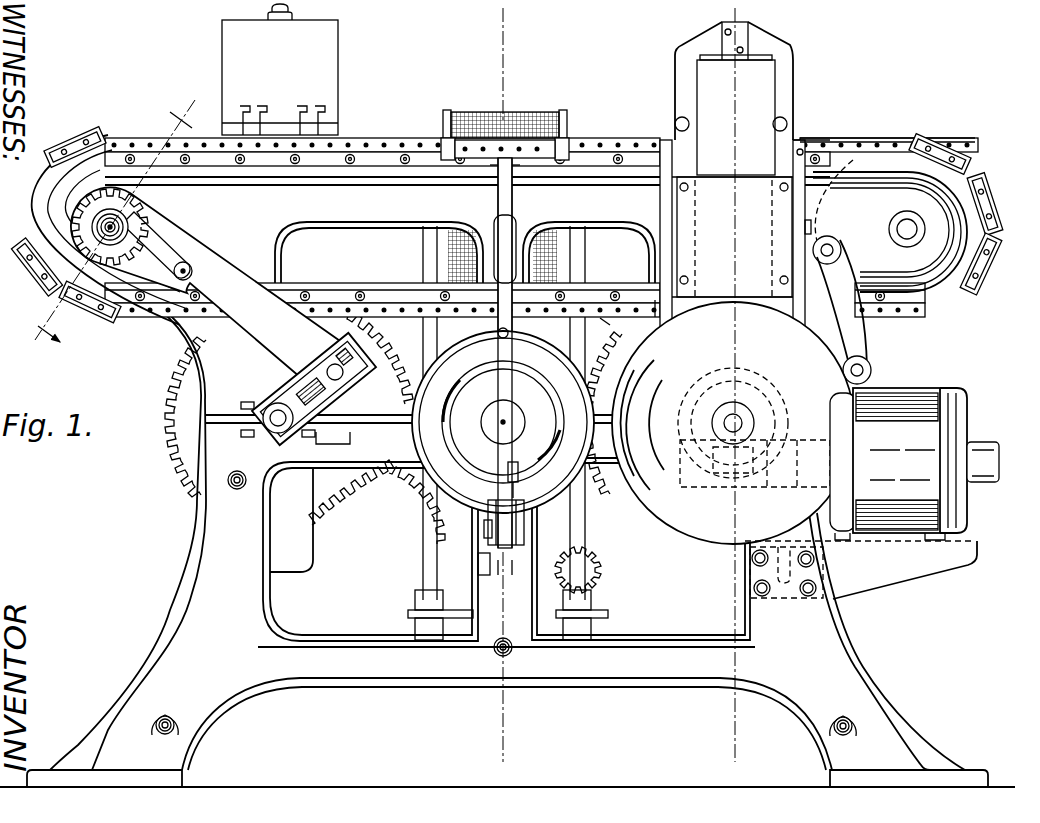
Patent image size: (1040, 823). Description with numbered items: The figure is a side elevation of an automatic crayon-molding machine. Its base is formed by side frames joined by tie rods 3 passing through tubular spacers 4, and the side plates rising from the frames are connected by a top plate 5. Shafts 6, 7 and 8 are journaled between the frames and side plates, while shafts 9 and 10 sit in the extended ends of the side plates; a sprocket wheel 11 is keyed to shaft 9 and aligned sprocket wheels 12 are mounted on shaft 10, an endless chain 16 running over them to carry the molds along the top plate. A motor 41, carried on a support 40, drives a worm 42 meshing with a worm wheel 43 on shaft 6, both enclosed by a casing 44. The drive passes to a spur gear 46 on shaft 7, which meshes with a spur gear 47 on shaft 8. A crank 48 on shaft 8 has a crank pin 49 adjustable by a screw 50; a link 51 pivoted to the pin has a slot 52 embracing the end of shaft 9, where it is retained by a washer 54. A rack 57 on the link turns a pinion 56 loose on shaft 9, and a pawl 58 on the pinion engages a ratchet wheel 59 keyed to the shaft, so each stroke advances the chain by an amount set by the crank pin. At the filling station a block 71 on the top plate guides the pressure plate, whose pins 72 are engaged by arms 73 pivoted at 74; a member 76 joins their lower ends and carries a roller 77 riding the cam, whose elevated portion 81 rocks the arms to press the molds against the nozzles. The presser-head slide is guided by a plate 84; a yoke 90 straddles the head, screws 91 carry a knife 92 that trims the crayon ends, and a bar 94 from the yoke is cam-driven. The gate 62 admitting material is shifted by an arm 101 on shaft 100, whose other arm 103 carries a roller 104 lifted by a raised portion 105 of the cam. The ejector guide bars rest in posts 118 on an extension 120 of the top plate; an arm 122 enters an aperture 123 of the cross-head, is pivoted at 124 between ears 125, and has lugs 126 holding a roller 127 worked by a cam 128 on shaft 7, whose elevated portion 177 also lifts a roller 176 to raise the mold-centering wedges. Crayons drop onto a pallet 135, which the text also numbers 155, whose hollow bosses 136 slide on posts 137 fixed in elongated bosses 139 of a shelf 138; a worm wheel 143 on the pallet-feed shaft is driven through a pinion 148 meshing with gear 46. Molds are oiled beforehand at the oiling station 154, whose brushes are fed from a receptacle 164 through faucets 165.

The tie rods 3 is at (852, 720).
The tubular spacers 4 is at (528, 15).
The top plate 5 is at (332, 167).
The shaft 6 is at (733, 423).
The shaft 7 is at (503, 422).
The shaft 8 is at (272, 410).
The shaft 9 is at (122, 225).
The shaft 10 is at (900, 245).
The sprocket wheel 11 is at (118, 210).
The sprocket wheels 12 is at (988, 210).
The endless chain 16 is at (348, 298).
The motor bracket 40 is at (905, 575).
The motor 41 is at (914, 464).
The worm 42 is at (748, 470).
The worm wheel 43 is at (760, 427).
The casing 44 is at (708, 430).
The spur gear 46 is at (421, 492).
The spur gear 47 is at (333, 505).
The crank 48 is at (333, 445).
The crank pin 49 is at (352, 392).
The screw 50 is at (372, 345).
The link 51 is at (240, 268).
The slot 52 is at (193, 266).
The washer 54 is at (40, 250).
The pinion 56 is at (60, 245).
The rack 57 is at (186, 240).
The pawl 58 is at (95, 198).
The ratchet wheel 59 is at (128, 228).
The slide or gate 62 is at (887, 127).
The block 71 is at (712, 160).
The pin 72 is at (797, 153).
The arms 73 is at (790, 200).
The pivot 74 is at (790, 230).
The member 76 is at (714, 324).
The anti-friction roller 77 is at (766, 333).
The elevated portion 81 is at (655, 385).
The plate 84 is at (733, 238).
The yoke 90 is at (785, 48).
The screws 91 is at (788, 122).
The knife 92 is at (808, 135).
The bar 94 is at (748, 35).
The shaft 100 is at (842, 245).
The arm 101 is at (862, 185).
The arm 103 is at (868, 346).
The roller 104 is at (871, 369).
The raised portion 105 is at (640, 400).
The posts 118 is at (445, 160).
The extension 120 is at (480, 175).
The arm 122 is at (512, 208).
The aperture 123 is at (505, 149).
The pivot 124 is at (484, 534).
The ears 125 is at (524, 528).
The lugs 126 is at (518, 466).
The anti-friction roller 127 is at (520, 480).
The cam 128 is at (458, 416).
The pallet 135 is at (612, 275).
The depending boss 136 is at (596, 333).
The posts 137 is at (588, 538).
The shelf or bracket 138 is at (603, 610).
The elongated bosses 139 is at (603, 630).
The worm wheel 143 is at (490, 575).
The pinion 148 is at (588, 556).
The brush holder 154 is at (565, 118).
The pallet 155 is at (520, 120).
The receptacle 164 is at (280, 69).
The faucets 165 is at (262, 100).
The anti-friction roller 176 is at (510, 333).
The elevated portion 177 is at (410, 425).